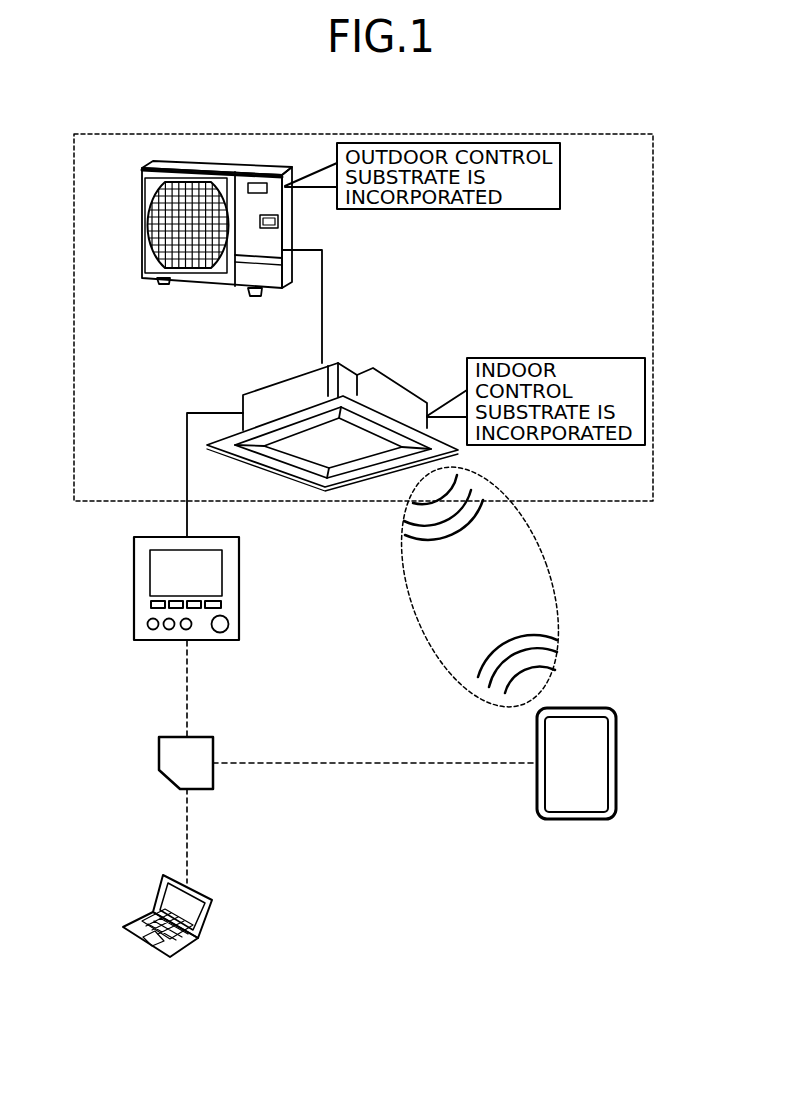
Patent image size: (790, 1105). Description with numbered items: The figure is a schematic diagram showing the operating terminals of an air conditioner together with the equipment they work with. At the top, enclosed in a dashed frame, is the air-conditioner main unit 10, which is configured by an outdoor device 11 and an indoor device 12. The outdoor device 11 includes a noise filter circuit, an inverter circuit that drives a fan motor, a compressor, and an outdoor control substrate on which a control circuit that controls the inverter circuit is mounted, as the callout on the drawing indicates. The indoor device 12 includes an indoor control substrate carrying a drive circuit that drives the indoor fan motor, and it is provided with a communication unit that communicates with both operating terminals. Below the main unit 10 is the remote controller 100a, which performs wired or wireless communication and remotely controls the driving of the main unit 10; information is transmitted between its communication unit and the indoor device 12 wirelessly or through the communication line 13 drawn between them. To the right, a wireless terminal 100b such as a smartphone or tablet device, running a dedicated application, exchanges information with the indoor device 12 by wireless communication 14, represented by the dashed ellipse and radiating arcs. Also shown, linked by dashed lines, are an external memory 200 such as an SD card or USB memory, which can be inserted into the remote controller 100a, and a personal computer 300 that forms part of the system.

The air-conditioner main unit 10 is at (610, 134).
The outdoor device 11 is at (292, 224).
The indoor device 12 is at (399, 383).
The communication line 13 is at (186, 456).
The wireless communication 14 is at (547, 579).
The remote controller 100a is at (240, 585).
The wireless terminal 100b is at (617, 755).
The external memory 200 is at (158, 765).
The personal computer 300 is at (156, 897).